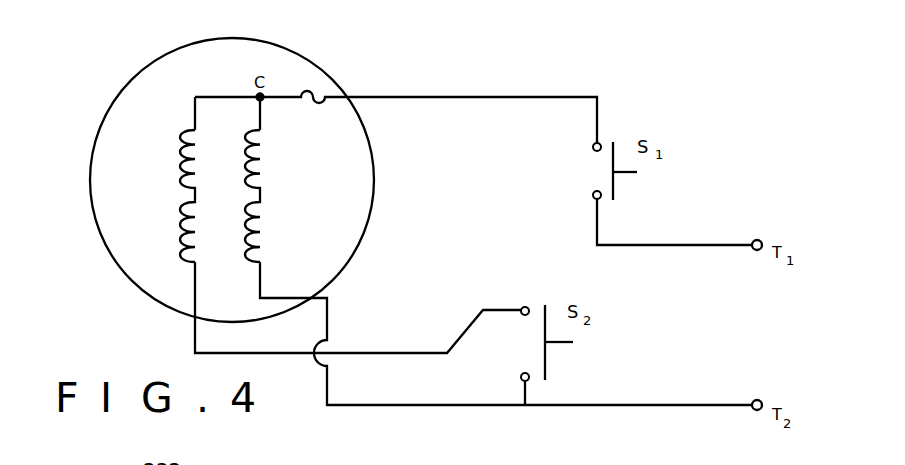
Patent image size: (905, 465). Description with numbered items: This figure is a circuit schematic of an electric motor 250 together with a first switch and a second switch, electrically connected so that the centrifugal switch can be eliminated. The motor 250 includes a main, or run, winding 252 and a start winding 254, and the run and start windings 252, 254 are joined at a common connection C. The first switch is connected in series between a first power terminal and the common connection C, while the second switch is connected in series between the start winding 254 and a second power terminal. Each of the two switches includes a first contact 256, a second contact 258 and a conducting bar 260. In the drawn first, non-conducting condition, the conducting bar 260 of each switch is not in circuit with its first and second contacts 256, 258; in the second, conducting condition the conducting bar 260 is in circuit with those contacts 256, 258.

The electric motor 250 is at (290, 48).
The main winding 252 is at (285, 186).
The start winding 254 is at (150, 202).
The first contact 256 is at (593, 151).
The second contact 258 is at (593, 200).
The conducting bar 260 is at (615, 183).